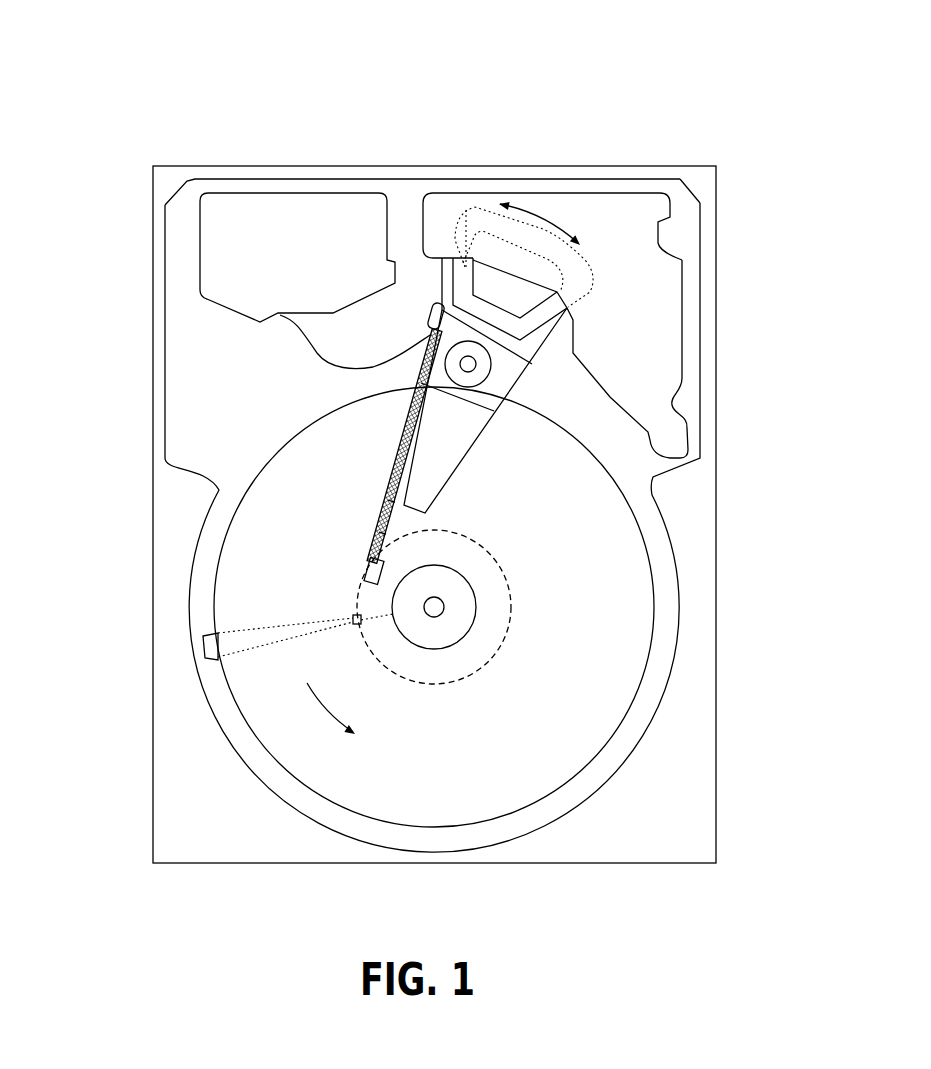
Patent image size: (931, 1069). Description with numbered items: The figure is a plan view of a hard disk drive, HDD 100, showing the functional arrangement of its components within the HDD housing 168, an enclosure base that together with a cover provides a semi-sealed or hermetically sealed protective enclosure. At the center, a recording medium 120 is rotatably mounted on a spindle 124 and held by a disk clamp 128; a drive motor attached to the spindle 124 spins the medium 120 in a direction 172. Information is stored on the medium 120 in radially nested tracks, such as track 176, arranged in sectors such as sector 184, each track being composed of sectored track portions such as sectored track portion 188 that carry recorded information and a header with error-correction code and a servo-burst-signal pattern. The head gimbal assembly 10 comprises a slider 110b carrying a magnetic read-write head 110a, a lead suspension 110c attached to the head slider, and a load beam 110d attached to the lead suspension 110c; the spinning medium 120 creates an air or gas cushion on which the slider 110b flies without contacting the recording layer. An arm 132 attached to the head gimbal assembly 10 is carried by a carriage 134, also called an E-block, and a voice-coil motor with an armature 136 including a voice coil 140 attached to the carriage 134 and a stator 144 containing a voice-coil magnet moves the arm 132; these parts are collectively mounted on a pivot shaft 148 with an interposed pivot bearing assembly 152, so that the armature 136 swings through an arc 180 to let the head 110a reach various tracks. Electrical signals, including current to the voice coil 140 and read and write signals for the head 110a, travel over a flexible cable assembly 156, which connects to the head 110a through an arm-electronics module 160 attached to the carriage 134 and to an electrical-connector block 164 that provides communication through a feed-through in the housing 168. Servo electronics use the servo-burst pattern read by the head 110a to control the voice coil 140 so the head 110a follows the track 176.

The hard disk drive 100 is at (88, 60).
The head stack assembly 10 is at (245, 457).
The magnetic read-write head 110a is at (360, 576).
The slider 110b is at (365, 555).
The lead suspension 110c is at (373, 523).
The load beam 110d is at (372, 495).
The recording medium 120 is at (593, 565).
The spindle 124 is at (440, 607).
The disk clamp 128 is at (456, 620).
The arm 132 is at (427, 465).
The carriage 134 is at (483, 395).
The armature 136 is at (437, 250).
The voice coil 140 is at (471, 208).
The stator 144 is at (655, 272).
The pivot shaft 148 is at (476, 364).
The pivot bearing assembly 152 is at (482, 377).
The flexible cable assembly 156 is at (307, 342).
The arm-electronics module 160 is at (427, 332).
The electrical-connector block 164 is at (220, 256).
The HDD housing 168 is at (703, 177).
The direction 172 is at (340, 712).
The track 176 is at (502, 568).
The arc 180 is at (538, 207).
The sector 184 is at (202, 646).
The sectored track portion 188 is at (350, 620).